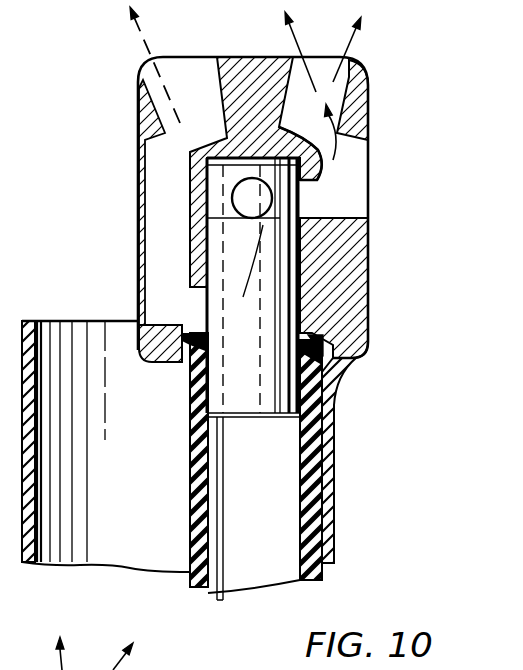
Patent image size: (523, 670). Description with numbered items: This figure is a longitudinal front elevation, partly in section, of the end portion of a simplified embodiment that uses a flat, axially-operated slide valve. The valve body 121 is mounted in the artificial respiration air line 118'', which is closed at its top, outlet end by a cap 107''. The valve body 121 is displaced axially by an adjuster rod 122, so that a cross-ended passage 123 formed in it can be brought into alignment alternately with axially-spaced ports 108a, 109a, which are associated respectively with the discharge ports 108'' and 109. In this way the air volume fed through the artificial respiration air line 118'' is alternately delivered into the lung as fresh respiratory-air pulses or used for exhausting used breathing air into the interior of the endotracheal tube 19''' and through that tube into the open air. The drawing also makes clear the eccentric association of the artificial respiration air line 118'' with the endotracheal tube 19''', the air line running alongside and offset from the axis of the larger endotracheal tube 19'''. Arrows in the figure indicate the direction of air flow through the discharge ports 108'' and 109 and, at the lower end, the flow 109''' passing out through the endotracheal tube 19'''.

The cap 107'' is at (291, 209).
The discharge port 108'' is at (175, 65).
The axially-spaced port 108a is at (200, 289).
The discharge port 109 is at (323, 80).
The axially-spaced port 109a is at (248, 135).
The flow direction 109''' is at (94, 646).
The artificial respiration air line 118'' is at (292, 460).
The valve body 121 is at (278, 384).
The adjuster rod 122 is at (221, 599).
The cross-ended passage 123 is at (248, 196).
The endotracheal tube 19''' is at (214, 460).